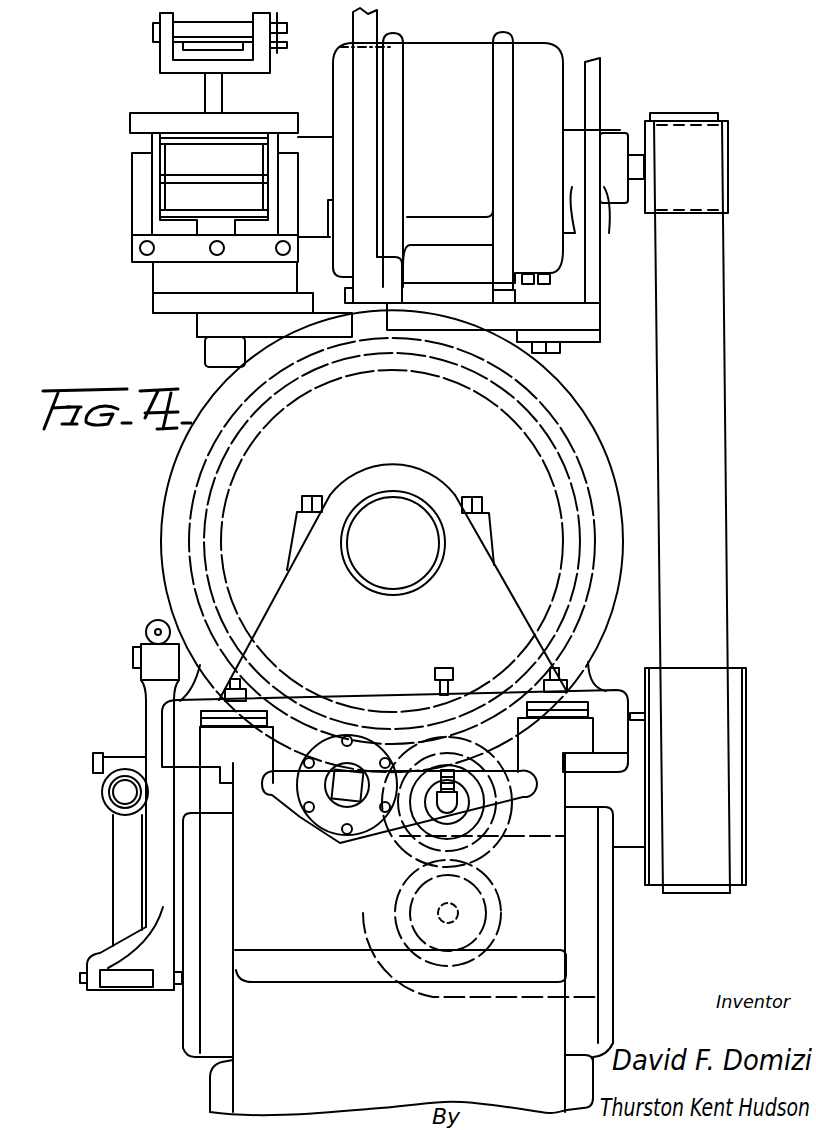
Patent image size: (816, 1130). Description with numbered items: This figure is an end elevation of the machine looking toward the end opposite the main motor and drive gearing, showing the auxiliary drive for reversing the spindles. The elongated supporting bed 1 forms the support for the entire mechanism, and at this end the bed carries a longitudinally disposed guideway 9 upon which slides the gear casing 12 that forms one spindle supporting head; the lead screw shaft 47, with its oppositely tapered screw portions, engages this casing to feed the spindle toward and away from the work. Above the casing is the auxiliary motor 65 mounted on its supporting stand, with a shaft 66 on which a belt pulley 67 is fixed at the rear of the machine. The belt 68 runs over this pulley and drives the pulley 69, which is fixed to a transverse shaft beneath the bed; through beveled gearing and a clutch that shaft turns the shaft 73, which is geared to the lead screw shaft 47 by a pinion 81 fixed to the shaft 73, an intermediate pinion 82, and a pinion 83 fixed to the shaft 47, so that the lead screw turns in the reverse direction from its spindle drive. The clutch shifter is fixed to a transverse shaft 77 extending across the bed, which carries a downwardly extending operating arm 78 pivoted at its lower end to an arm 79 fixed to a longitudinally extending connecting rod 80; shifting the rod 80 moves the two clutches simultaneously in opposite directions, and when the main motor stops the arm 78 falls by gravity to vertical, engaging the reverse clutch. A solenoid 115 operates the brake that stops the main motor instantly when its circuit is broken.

The supporting bed 1 is at (548, 820).
The guideway 9 is at (192, 741).
The gear casing 12 is at (603, 407).
The lead screw shaft 47 is at (347, 787).
The auxiliary motor 65 is at (547, 64).
The motor shaft 66 is at (636, 183).
The belt pulley 67 is at (737, 128).
The belt 68 is at (718, 590).
The pulley 69 is at (756, 716).
The shaft 73 is at (448, 911).
The transverse shaft 77 is at (141, 664).
The operating arm 78 is at (146, 709).
The arm 79 is at (120, 873).
The connecting rod 80 is at (123, 793).
The pinion 81 is at (483, 903).
The intermediate pinion 82 is at (410, 852).
The pinion 83 is at (362, 823).
The solenoid 115 is at (173, 200).